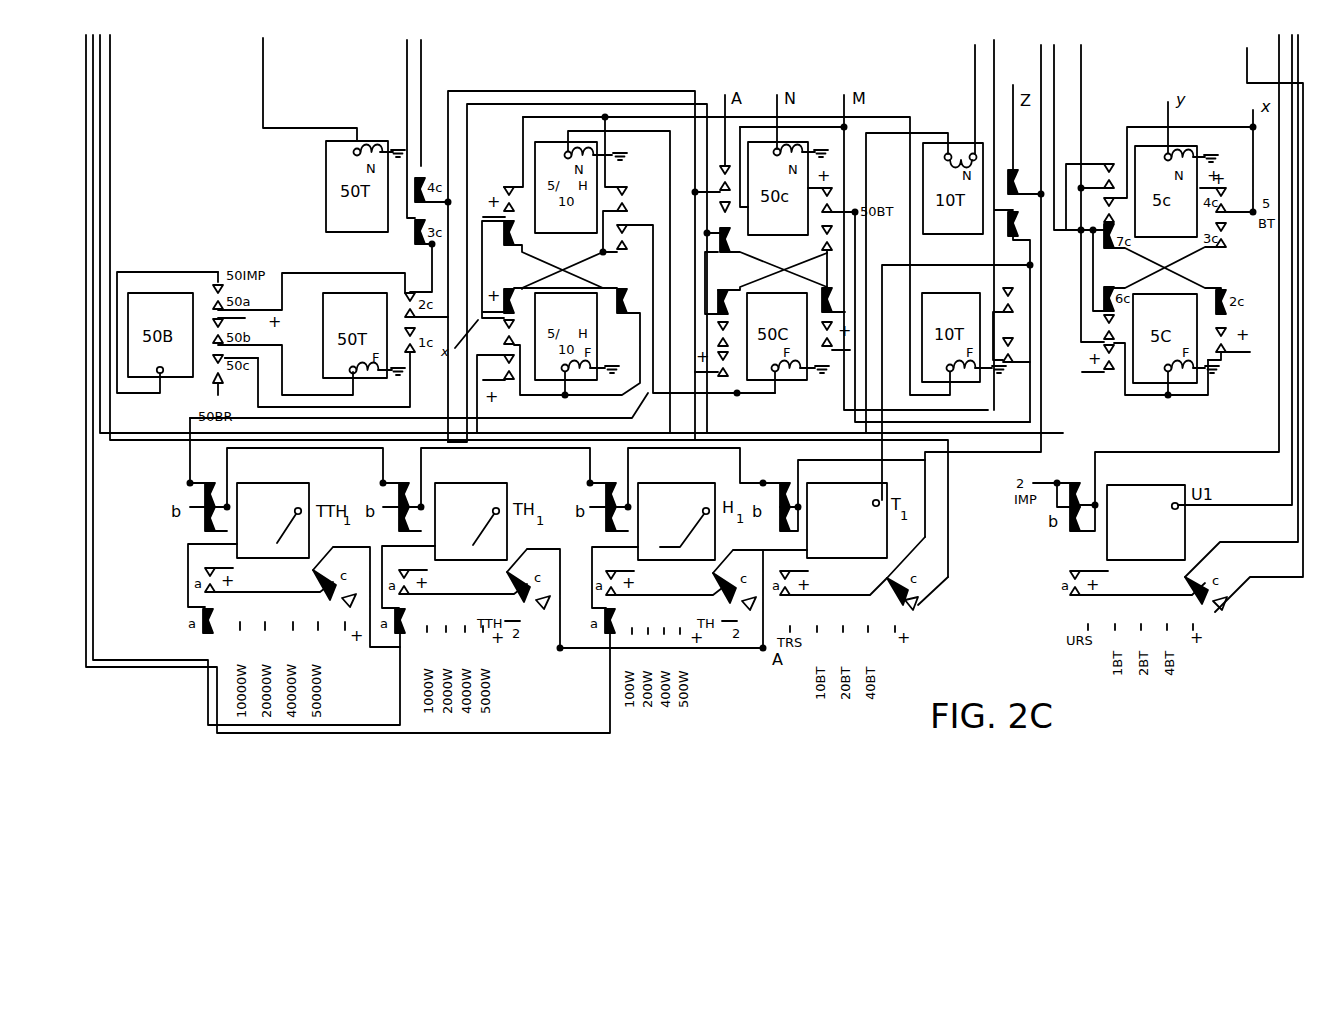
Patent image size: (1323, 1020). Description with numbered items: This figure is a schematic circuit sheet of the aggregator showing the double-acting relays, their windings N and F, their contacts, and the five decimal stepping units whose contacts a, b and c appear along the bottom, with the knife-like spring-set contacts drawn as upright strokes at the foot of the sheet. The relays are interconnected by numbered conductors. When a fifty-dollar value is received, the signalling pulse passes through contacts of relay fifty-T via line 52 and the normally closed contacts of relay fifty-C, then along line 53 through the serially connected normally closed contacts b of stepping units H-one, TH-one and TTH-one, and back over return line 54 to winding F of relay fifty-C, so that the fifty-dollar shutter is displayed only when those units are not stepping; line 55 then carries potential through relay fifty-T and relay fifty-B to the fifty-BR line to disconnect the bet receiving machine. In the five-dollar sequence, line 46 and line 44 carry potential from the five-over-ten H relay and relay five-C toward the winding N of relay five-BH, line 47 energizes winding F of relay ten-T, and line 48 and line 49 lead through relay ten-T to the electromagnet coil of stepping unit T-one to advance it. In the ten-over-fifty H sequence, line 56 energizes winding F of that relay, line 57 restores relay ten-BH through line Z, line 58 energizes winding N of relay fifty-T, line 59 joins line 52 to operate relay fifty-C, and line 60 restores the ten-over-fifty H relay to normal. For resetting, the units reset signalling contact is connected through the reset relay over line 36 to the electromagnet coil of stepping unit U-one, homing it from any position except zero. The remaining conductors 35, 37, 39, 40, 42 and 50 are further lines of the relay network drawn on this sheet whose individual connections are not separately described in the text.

The conductor 35 is at (1278, 59).
The line 36 is at (1288, 82).
The conductor 37 is at (1285, 65).
The conductor 39 is at (974, 58).
The conductor 40 is at (996, 60).
The conductor 42 is at (1066, 58).
The line 44 is at (1083, 72).
The line 46 is at (1063, 433).
The line 47 is at (898, 117).
The line 48 is at (988, 410).
The line 49 is at (892, 342).
The conductor 50 is at (1247, 69).
The line 52 is at (563, 91).
The line 53 is at (752, 473).
The return line 54 is at (537, 418).
The line 55 is at (636, 92).
The line 56 is at (112, 56).
The line 57 is at (1030, 71).
The line 58 is at (265, 57).
The line 59 is at (405, 60).
The line 60 is at (423, 60).